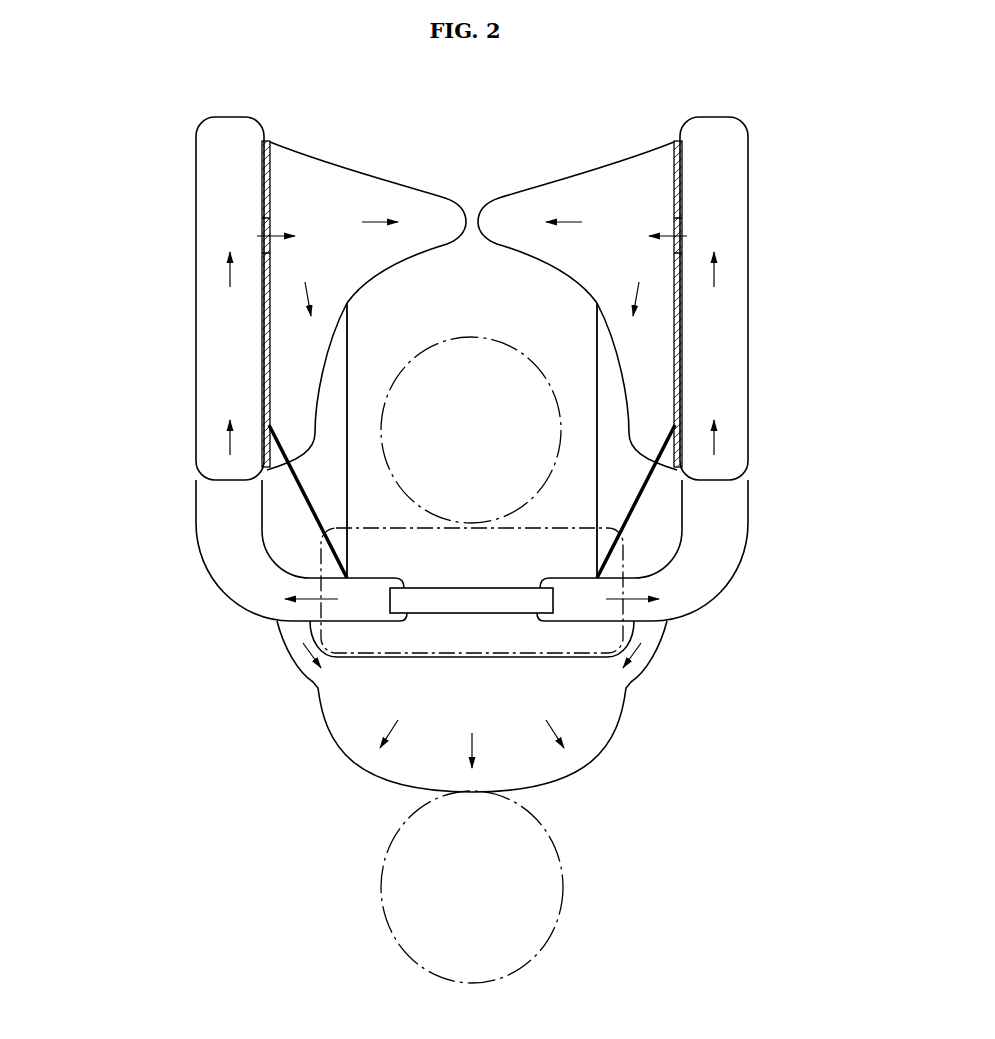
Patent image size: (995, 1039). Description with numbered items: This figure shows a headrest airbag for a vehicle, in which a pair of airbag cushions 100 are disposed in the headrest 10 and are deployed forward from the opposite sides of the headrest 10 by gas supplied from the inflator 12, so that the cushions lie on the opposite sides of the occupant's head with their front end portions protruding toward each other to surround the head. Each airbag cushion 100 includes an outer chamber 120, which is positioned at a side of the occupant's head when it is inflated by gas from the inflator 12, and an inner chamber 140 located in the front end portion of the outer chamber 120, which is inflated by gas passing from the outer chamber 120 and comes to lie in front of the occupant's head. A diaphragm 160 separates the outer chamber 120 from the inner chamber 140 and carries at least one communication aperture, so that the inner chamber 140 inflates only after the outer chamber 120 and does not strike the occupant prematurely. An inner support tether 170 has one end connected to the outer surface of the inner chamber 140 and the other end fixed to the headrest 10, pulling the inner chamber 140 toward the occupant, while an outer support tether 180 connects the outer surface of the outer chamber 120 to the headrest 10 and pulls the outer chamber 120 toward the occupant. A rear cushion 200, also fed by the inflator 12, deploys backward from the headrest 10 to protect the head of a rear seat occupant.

The headrest 10 is at (565, 527).
The inflator 12 is at (447, 600).
The airbag cushion 100 is at (172, 251).
The outer chamber 120 is at (735, 259).
The inner chamber 140 is at (582, 187).
The diaphragm 160 is at (678, 356).
The inner support tether 170 is at (347, 378).
The outer support tether 180 is at (303, 497).
The rear cushion 200 is at (583, 732).